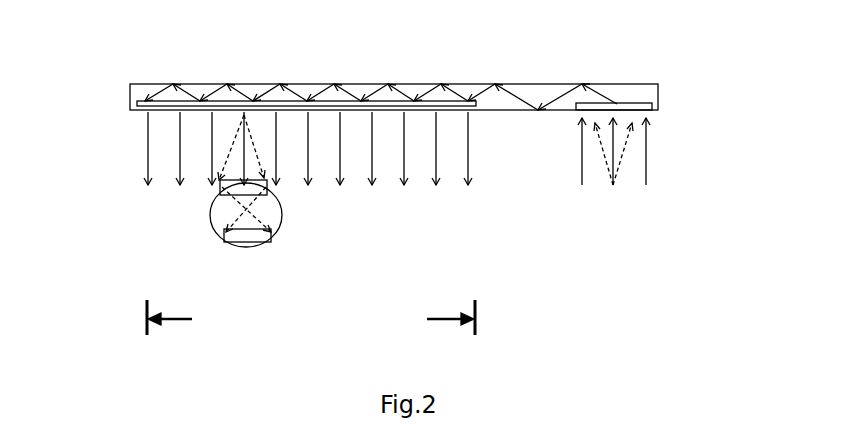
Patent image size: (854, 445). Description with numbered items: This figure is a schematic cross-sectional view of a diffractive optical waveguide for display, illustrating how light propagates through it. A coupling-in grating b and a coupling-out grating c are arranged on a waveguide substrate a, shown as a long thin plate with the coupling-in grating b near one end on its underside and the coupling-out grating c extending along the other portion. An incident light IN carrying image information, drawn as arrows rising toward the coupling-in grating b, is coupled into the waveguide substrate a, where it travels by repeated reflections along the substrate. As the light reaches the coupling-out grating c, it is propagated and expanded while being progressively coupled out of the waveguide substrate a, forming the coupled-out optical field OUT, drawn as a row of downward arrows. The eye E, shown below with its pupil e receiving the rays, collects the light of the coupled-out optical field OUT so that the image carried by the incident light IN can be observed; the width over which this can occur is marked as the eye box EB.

The waveguide substrate a is at (659, 86).
The coupling-in grating b is at (658, 105).
The coupling-out grating c is at (140, 103).
The coupled-out optical field OUT is at (140, 147).
The incident light IN is at (661, 167).
The eye E is at (213, 221).
The eye pupil / lens e is at (268, 188).
The eye box EB is at (311, 319).